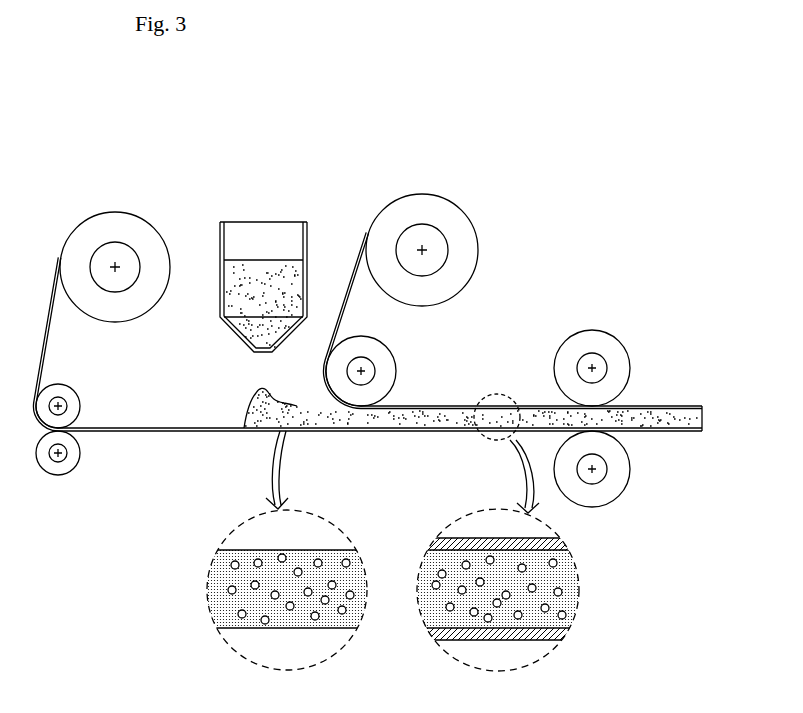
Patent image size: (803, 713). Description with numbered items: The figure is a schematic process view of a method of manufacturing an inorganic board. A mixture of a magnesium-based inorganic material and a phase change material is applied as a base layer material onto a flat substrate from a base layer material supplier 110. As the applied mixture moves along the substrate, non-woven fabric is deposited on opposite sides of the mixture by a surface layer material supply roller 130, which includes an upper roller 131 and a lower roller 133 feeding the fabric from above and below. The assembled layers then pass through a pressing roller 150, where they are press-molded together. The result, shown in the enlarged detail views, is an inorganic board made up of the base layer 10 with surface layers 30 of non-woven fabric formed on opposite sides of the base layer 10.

The base layer 10 is at (212, 575).
The surface layers 30 is at (557, 537).
The base layer material supplier 110 is at (280, 228).
The surface layer material supply roller 130 is at (315, 118).
The upper roller 131 is at (415, 200).
The lower roller 133 is at (127, 221).
The pressing roller 150 is at (597, 337).